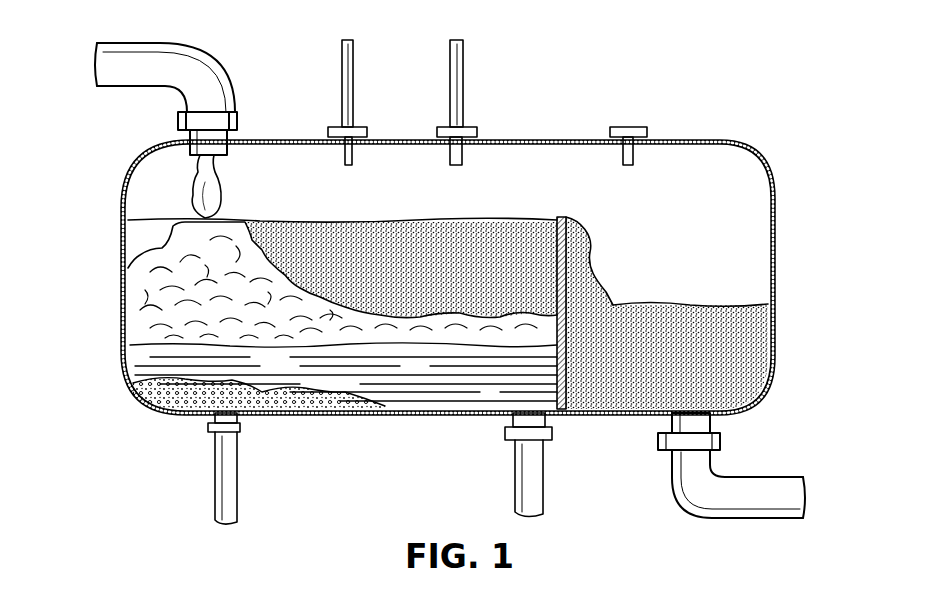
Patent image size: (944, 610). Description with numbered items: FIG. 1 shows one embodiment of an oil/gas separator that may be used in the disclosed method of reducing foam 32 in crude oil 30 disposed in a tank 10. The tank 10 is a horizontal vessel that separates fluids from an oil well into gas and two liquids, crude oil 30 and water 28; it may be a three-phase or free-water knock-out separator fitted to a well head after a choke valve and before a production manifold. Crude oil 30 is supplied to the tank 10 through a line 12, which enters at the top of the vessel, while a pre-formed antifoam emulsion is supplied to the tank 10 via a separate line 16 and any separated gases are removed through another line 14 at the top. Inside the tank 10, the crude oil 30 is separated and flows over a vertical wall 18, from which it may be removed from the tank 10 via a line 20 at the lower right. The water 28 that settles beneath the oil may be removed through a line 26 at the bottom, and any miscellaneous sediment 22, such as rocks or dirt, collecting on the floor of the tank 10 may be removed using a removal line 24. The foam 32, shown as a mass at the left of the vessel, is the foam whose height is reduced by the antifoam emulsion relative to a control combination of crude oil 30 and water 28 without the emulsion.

The tank 10 is at (720, 143).
The line 12 is at (217, 63).
The line 14 is at (462, 100).
The line 16 is at (353, 97).
The vertical wall 18 is at (565, 218).
The line 20 is at (738, 475).
The sediment 22 is at (268, 408).
The removal line 24 is at (217, 467).
The line 26 is at (545, 462).
The water 28 is at (427, 395).
The crude oil 30 is at (218, 200).
The foam 32 is at (152, 325).